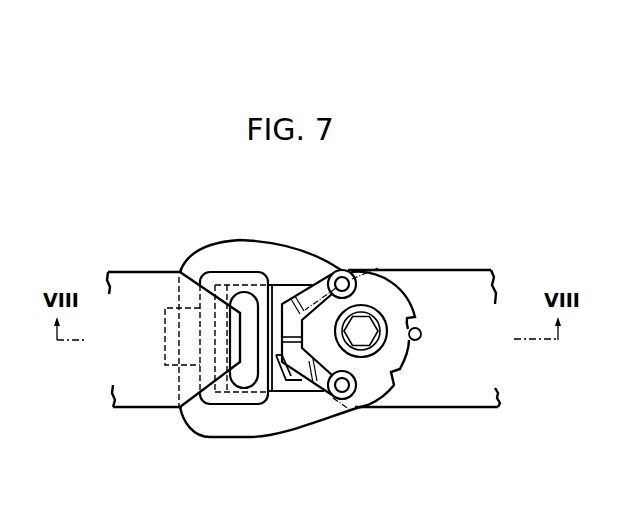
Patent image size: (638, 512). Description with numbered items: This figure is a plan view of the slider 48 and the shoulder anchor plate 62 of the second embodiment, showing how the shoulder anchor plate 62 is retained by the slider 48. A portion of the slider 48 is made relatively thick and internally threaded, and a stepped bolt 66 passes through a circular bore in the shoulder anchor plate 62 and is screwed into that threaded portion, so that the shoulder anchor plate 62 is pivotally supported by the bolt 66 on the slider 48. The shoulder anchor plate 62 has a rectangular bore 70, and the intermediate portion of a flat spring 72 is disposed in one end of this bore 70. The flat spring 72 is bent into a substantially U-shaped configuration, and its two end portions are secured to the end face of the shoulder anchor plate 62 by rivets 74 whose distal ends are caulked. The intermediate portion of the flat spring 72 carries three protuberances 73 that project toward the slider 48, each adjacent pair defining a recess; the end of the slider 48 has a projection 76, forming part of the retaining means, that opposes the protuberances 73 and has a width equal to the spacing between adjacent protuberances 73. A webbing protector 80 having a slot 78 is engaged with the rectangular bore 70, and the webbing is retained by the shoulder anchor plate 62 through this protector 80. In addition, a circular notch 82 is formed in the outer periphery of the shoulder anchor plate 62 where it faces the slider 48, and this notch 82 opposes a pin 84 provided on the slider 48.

The slider 48 is at (444, 262).
The shoulder anchor plate 62 is at (318, 245).
The stepped bolt 66 is at (358, 335).
The rectangular bore 70 is at (280, 286).
The flat spring 72 is at (360, 267).
The protuberances 73 is at (282, 339).
The rivets 74 is at (341, 282).
The projection 76 is at (273, 389).
The slot 78 is at (235, 291).
The webbing protector 80 is at (201, 414).
The circular notch 82 is at (391, 376).
The pin 84 is at (421, 333).